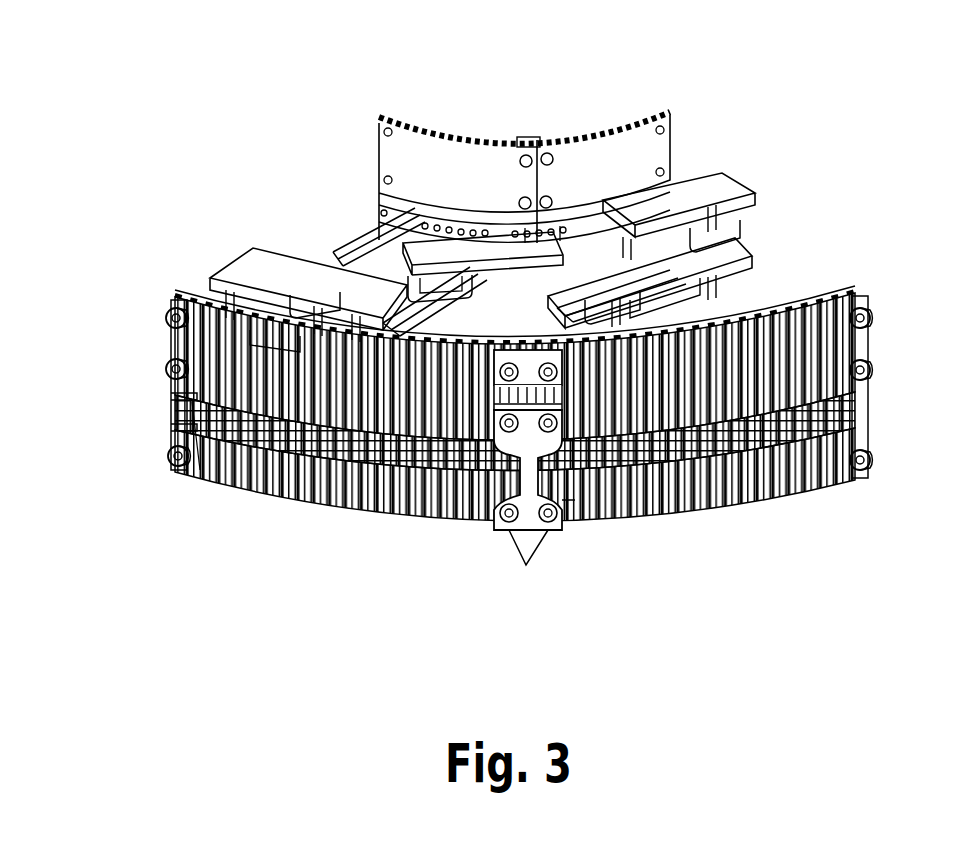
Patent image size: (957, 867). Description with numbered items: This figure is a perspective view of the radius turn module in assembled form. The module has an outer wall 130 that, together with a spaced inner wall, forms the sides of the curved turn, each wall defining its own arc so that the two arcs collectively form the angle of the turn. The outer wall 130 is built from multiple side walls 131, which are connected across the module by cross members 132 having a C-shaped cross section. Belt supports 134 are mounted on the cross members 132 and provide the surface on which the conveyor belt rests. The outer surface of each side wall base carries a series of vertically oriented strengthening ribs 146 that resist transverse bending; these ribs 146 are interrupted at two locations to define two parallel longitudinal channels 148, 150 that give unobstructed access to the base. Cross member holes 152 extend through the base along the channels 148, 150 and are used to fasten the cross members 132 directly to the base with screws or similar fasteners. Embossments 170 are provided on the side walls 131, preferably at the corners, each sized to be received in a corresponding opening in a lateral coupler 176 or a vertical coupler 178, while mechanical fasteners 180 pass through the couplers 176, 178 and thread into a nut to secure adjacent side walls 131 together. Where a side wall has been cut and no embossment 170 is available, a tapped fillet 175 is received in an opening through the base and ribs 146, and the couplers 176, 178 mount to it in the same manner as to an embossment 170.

The outer wall 130 is at (383, 117).
The side wall 131 is at (417, 150).
The cross member 132 is at (380, 250).
The belt support 134 is at (732, 180).
The strengthening rib 146 is at (497, 137).
The channel 148 is at (185, 393).
The channel 150 is at (183, 426).
The cross member hole 152 is at (447, 228).
The embossment 170 is at (872, 318).
The tapped fillet 175 is at (548, 156).
The lateral coupler 176 is at (540, 137).
The vertical coupler 178 is at (495, 522).
The mechanical fastener 180 is at (575, 440).